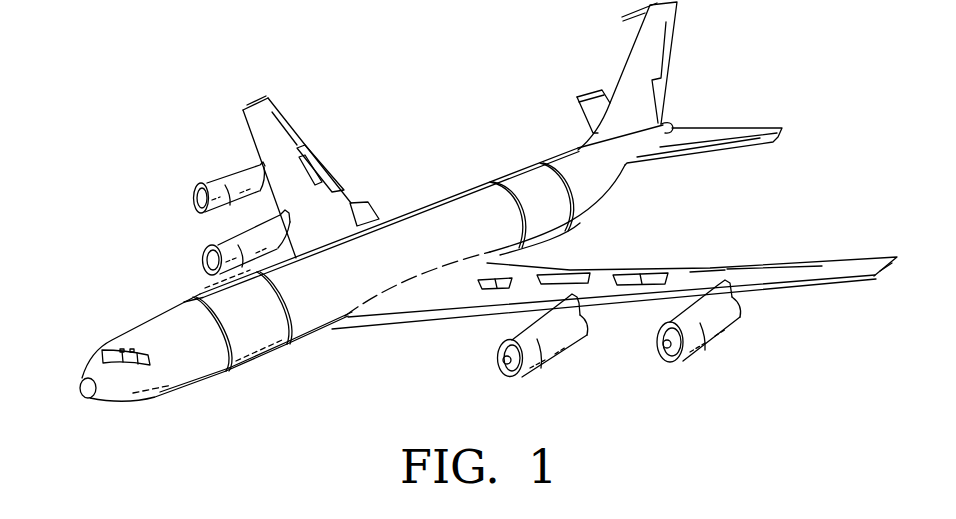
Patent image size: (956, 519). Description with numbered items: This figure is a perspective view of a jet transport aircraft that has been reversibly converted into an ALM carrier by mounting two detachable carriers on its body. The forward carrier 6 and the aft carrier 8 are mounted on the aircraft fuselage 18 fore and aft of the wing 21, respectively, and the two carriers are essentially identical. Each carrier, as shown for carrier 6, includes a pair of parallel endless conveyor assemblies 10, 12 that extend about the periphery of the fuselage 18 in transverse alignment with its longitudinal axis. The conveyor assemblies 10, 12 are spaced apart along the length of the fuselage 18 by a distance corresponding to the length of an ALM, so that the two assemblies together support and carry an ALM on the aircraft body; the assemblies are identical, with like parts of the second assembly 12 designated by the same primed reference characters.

The carrier 8 is at (502, 146).
The carrier 6 is at (267, 367).
The endless conveyor assembly 10 is at (227, 368).
The endless conveyor assembly 12 is at (291, 331).
The aircraft fuselage 18 is at (366, 277).
The wing 21 is at (600, 285).